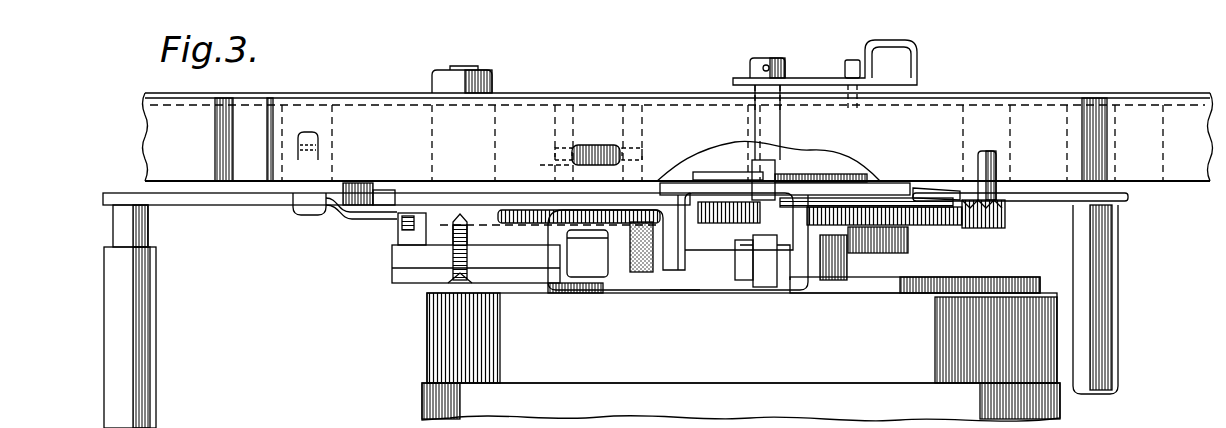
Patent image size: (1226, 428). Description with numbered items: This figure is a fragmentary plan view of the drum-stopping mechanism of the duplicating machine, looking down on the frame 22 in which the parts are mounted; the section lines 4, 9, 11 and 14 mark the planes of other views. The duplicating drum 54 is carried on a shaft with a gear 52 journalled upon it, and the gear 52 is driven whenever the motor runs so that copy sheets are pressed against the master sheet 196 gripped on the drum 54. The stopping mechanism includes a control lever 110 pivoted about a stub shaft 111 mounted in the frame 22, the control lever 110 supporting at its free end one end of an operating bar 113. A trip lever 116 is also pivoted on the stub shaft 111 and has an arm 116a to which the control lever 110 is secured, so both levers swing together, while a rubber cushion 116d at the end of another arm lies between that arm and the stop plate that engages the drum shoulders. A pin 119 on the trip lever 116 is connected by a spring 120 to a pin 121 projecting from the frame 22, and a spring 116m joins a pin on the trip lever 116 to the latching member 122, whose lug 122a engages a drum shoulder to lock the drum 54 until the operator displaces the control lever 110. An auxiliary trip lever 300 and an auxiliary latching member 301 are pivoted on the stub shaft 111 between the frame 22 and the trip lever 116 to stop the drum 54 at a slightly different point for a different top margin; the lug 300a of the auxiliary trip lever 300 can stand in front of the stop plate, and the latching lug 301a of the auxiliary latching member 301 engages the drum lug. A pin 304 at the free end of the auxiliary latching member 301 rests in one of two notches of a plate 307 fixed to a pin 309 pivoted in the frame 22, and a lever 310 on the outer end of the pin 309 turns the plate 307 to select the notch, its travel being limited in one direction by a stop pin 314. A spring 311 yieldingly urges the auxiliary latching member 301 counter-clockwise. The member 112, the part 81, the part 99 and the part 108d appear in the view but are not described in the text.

The section line 4- 4 is at (768, 110).
The section line 9- 9 is at (147, 188).
The section line 11- 11 is at (392, 283).
The section line 14- 14 is at (243, 185).
The frame 22 is at (1044, 93).
The gear 52 is at (975, 226).
The duplicating drum 54 is at (445, 350).
The rack bar 81 is at (908, 240).
The bar 99 is at (948, 274).
The hatched member 108d is at (830, 276).
The control lever 110 is at (220, 207).
The stub shaft 111 is at (470, 268).
The bracket 112 is at (310, 215).
The operating bar 113 is at (142, 356).
The trip lever 116 is at (550, 234).
The arm 116a is at (383, 165).
The rubber cushion 116d is at (640, 262).
The spring 116m is at (400, 225).
The pin 119 is at (552, 167).
The spring 120 is at (602, 146).
The pin 121 is at (640, 118).
The latching member 122 is at (425, 272).
The lug 122a is at (752, 266).
The master sheet 196 is at (425, 405).
The auxiliary trip lever 300 is at (629, 203).
The lug 300a is at (686, 275).
The auxiliary latching member 301 is at (668, 192).
The latching lug 301a is at (792, 268).
The pin 304 is at (780, 176).
The plate 307 is at (835, 166).
The pin 309 is at (782, 120).
The lever 310 is at (891, 60).
The spring 311 is at (1010, 192).
The stop pin 314 is at (852, 60).